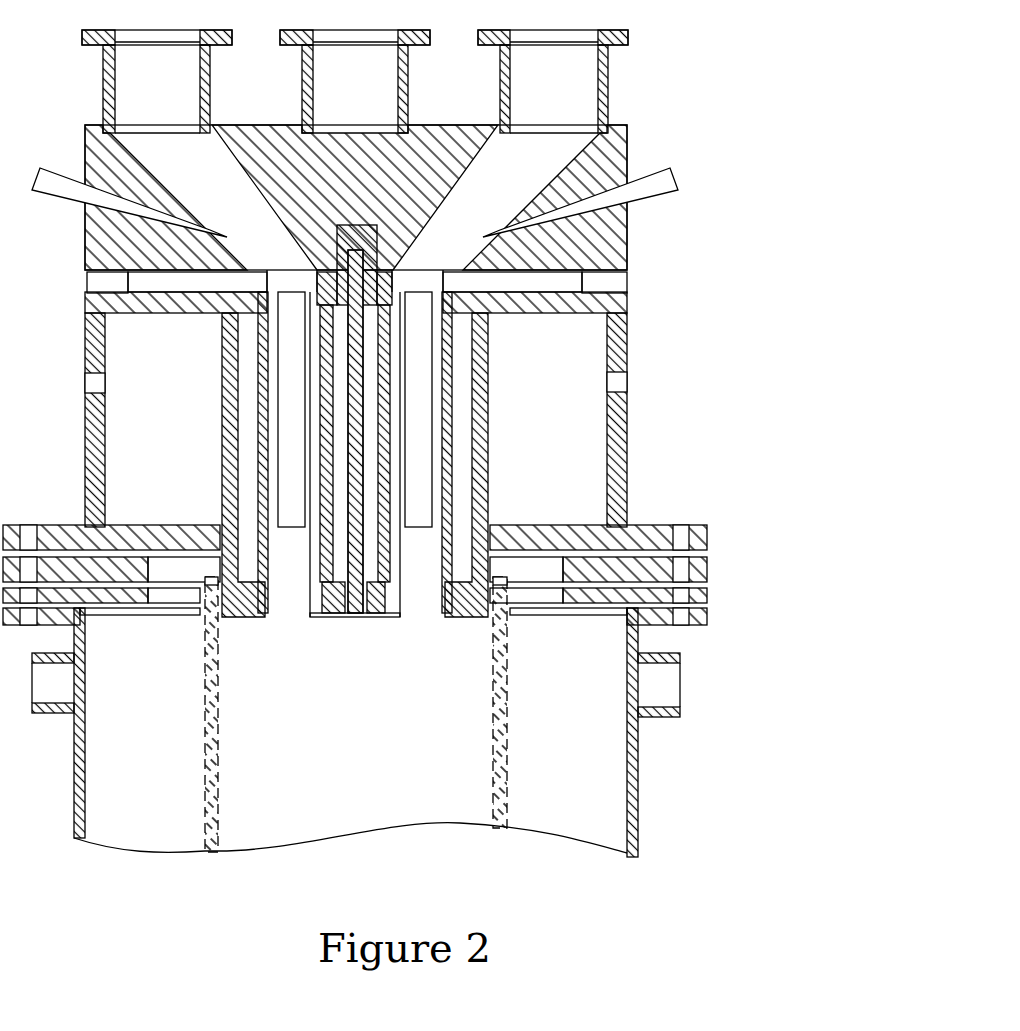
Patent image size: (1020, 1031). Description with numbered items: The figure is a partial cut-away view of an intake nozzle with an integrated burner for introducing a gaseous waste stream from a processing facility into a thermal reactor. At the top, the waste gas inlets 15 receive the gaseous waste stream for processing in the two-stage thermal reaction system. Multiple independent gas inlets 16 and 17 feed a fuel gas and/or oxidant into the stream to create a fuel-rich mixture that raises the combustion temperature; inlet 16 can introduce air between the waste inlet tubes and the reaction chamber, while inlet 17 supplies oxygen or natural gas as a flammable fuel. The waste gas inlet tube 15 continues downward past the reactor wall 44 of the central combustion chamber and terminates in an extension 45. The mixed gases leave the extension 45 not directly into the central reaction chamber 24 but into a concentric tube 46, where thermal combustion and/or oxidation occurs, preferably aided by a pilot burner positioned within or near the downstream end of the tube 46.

The waste gas inlet 15 is at (608, 83).
The gas inlet 16 is at (672, 178).
The gas inlet 17 is at (625, 293).
The extension 45 is at (425, 487).
The reactor wall 44 is at (710, 545).
The concentric tube 46 is at (412, 607).
The central reaction chamber 24 is at (407, 808).